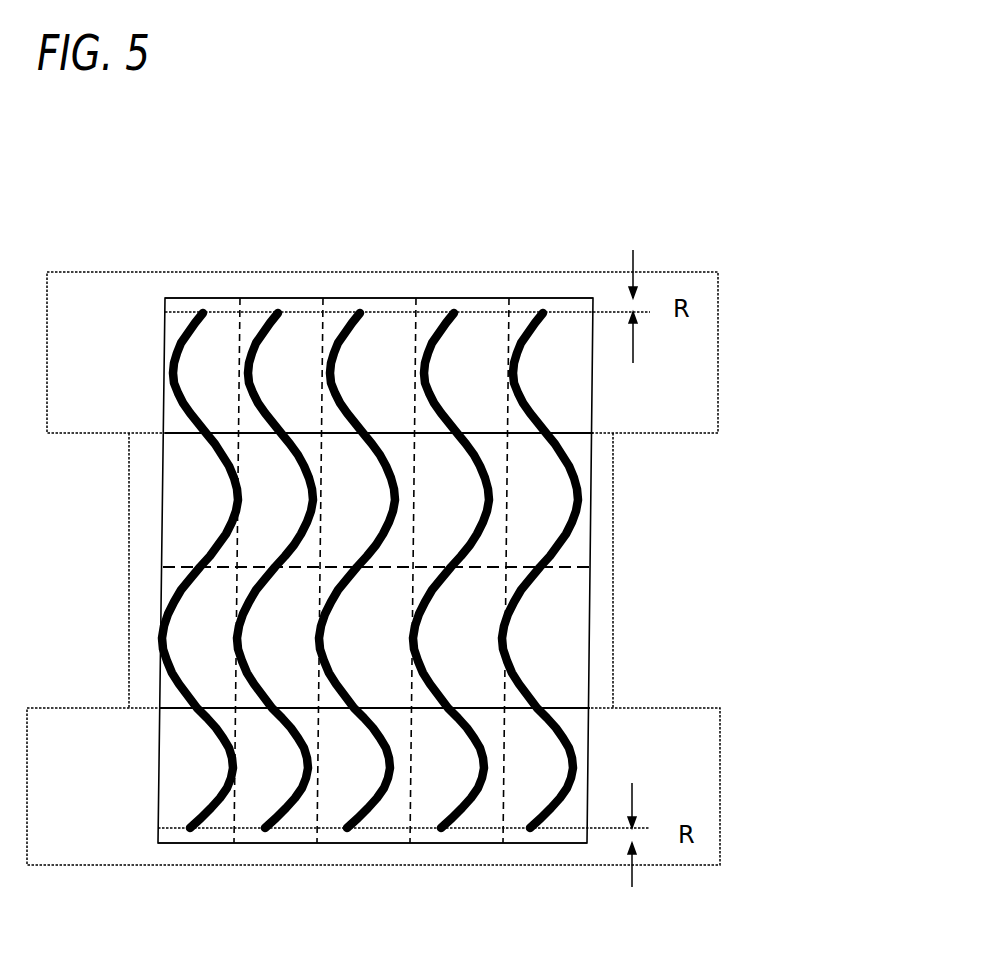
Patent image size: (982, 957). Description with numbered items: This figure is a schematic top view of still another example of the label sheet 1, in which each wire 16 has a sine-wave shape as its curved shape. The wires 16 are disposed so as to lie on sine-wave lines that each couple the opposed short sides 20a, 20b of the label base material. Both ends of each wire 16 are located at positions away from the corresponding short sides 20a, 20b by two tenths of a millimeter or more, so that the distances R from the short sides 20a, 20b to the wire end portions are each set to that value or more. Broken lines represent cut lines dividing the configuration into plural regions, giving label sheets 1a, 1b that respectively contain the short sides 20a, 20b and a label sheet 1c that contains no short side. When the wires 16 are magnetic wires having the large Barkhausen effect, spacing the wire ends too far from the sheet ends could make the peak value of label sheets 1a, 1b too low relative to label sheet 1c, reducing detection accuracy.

The label sheet 1 is at (407, 214).
The label sheet containing short side 1a is at (718, 360).
The label sheet containing short side 1b is at (720, 780).
The label sheet containing no short sides 1c is at (618, 567).
The wire 16 is at (577, 475).
The short side 20a is at (275, 298).
The short side 20b is at (448, 843).